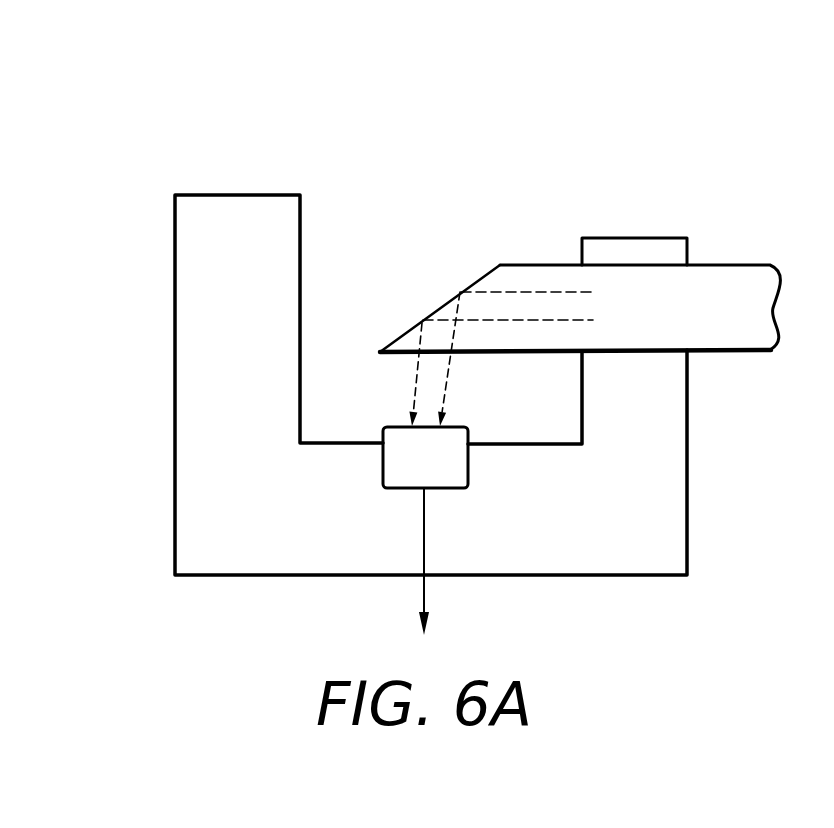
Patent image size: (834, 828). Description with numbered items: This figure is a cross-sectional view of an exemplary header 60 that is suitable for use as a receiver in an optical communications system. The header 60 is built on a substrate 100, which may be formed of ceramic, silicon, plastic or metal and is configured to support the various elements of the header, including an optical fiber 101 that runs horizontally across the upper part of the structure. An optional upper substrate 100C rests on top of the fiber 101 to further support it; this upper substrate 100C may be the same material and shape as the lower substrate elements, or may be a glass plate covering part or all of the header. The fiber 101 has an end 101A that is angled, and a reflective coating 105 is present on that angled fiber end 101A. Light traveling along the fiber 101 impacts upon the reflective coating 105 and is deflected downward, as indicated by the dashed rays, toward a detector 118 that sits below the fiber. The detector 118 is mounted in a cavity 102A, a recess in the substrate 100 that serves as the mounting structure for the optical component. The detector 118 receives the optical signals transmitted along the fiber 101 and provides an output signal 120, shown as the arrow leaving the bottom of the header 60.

The header 60 is at (411, 129).
The substrate 100 is at (250, 555).
The upper substrate 100C is at (635, 247).
The optical fiber 101 is at (660, 325).
The fiber end 101A is at (437, 333).
The reflective coating 105 is at (485, 275).
The cavity 102A is at (468, 475).
The detector 118 is at (447, 460).
The output signal 120 is at (424, 590).